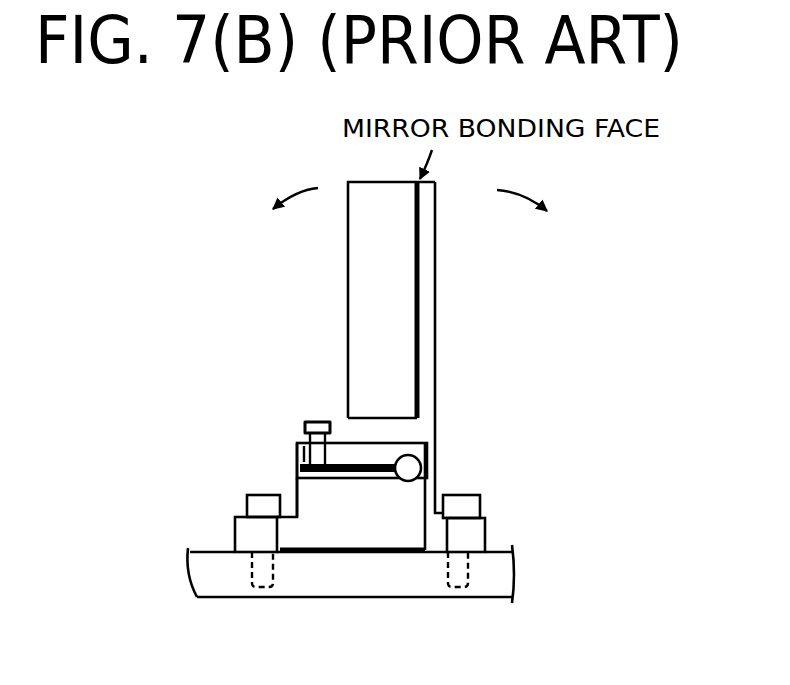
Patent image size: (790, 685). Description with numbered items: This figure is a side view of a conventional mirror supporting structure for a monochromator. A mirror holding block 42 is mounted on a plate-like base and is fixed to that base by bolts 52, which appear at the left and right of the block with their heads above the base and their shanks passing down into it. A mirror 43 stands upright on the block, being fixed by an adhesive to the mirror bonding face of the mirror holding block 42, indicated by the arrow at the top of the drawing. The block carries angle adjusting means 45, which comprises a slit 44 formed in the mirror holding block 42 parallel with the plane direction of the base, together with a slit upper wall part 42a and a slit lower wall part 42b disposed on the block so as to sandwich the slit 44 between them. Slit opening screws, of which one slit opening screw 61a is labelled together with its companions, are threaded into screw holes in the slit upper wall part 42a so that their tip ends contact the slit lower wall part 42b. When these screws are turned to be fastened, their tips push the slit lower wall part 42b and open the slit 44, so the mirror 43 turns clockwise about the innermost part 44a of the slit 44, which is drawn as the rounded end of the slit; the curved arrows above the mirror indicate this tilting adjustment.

The mirror 43 is at (356, 256).
The mirror holding block 42 is at (437, 428).
The slit upper wall part 42a is at (296, 452).
The slit lower wall part 42b is at (307, 495).
The slit 44 is at (427, 462).
The innermost part of the slit 44a is at (426, 471).
The angle adjusting means 45 is at (284, 426).
The bolts 52 is at (265, 495).
The slit opening screw 61a is at (306, 423).